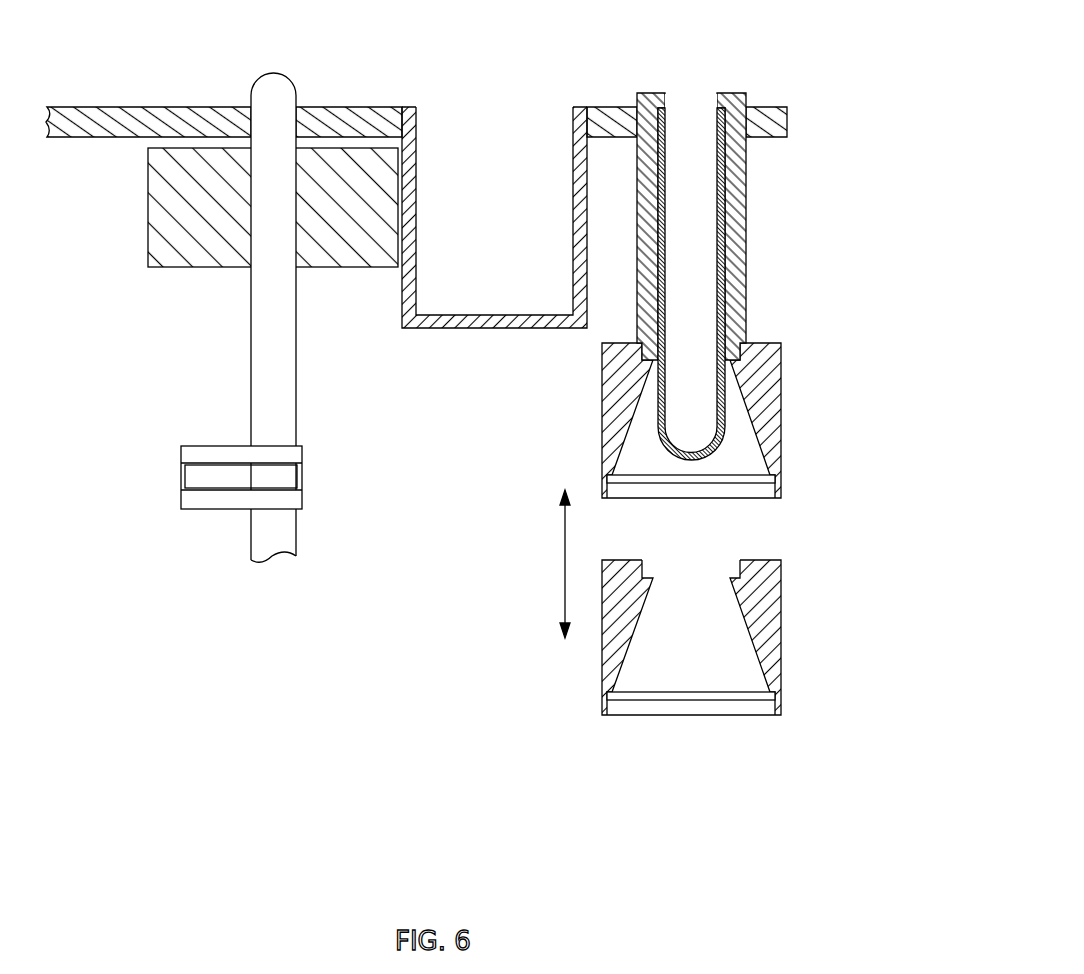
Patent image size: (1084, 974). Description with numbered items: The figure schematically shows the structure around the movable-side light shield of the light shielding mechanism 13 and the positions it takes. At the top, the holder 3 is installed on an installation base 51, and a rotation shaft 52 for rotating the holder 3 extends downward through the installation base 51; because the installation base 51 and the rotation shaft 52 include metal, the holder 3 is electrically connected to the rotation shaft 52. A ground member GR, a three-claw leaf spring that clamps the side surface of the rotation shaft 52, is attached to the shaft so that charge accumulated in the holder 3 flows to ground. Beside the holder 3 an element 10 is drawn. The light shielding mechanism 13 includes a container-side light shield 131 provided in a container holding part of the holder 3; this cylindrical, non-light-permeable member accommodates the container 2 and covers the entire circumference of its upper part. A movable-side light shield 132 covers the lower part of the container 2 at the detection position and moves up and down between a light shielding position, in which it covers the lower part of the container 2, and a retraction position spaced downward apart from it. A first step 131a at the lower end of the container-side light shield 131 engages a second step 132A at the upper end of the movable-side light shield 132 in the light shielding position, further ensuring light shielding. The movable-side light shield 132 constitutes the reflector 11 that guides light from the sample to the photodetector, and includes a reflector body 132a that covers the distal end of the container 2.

The holder 3 is at (187, 107).
The installation base 51 is at (148, 213).
The rotation shaft 52 is at (251, 335).
The ground member GR is at (200, 509).
The container 10 is at (510, 247).
The container 2 is at (693, 93).
The container-side light shield 131 is at (747, 218).
The first step 131a is at (743, 343).
The light shielding mechanism 13 is at (836, 269).
The second step 132A is at (734, 362).
The movable-side light shield 132 is at (773, 437).
The reflector body 132a is at (740, 570).
The reflector 11 is at (752, 480).